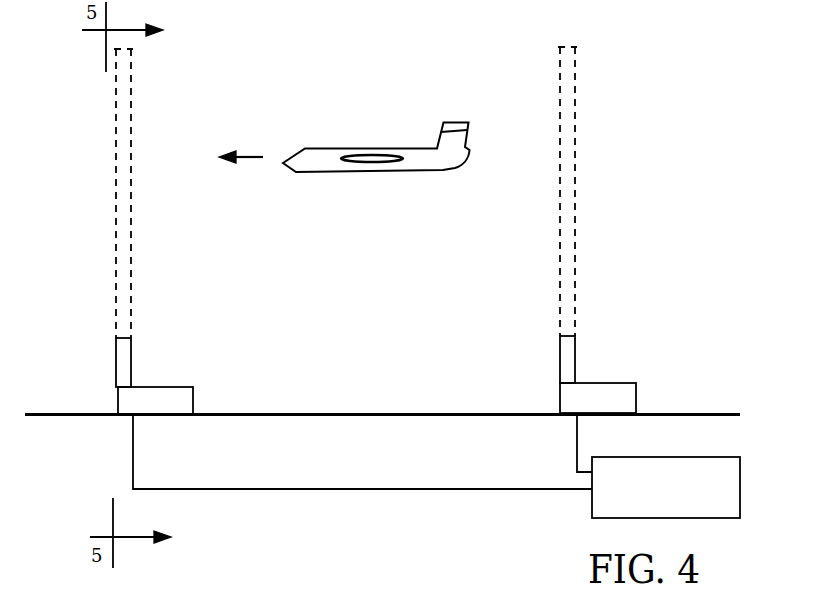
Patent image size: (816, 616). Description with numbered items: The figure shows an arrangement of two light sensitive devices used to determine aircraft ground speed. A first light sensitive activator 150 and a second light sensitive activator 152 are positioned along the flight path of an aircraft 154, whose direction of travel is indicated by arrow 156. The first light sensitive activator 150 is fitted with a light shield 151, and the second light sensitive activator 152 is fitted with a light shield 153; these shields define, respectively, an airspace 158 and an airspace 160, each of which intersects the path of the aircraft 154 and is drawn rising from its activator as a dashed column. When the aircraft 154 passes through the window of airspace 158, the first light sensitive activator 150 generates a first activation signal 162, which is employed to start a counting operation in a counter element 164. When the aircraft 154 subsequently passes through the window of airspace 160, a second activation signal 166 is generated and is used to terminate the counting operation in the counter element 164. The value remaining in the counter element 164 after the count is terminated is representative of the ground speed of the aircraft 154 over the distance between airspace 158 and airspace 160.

The first light sensitive activator 150 is at (612, 383).
The light shield 151 is at (575, 352).
The second light sensitive activator 152 is at (180, 387).
The light shield 153 is at (132, 360).
The aircraft 154 is at (443, 170).
The arrow 156 is at (242, 155).
The airspace 158 is at (575, 275).
The airspace 160 is at (132, 283).
The first activation signal 162 is at (575, 455).
The counter element 164 is at (655, 457).
The second activation signal 166 is at (135, 472).